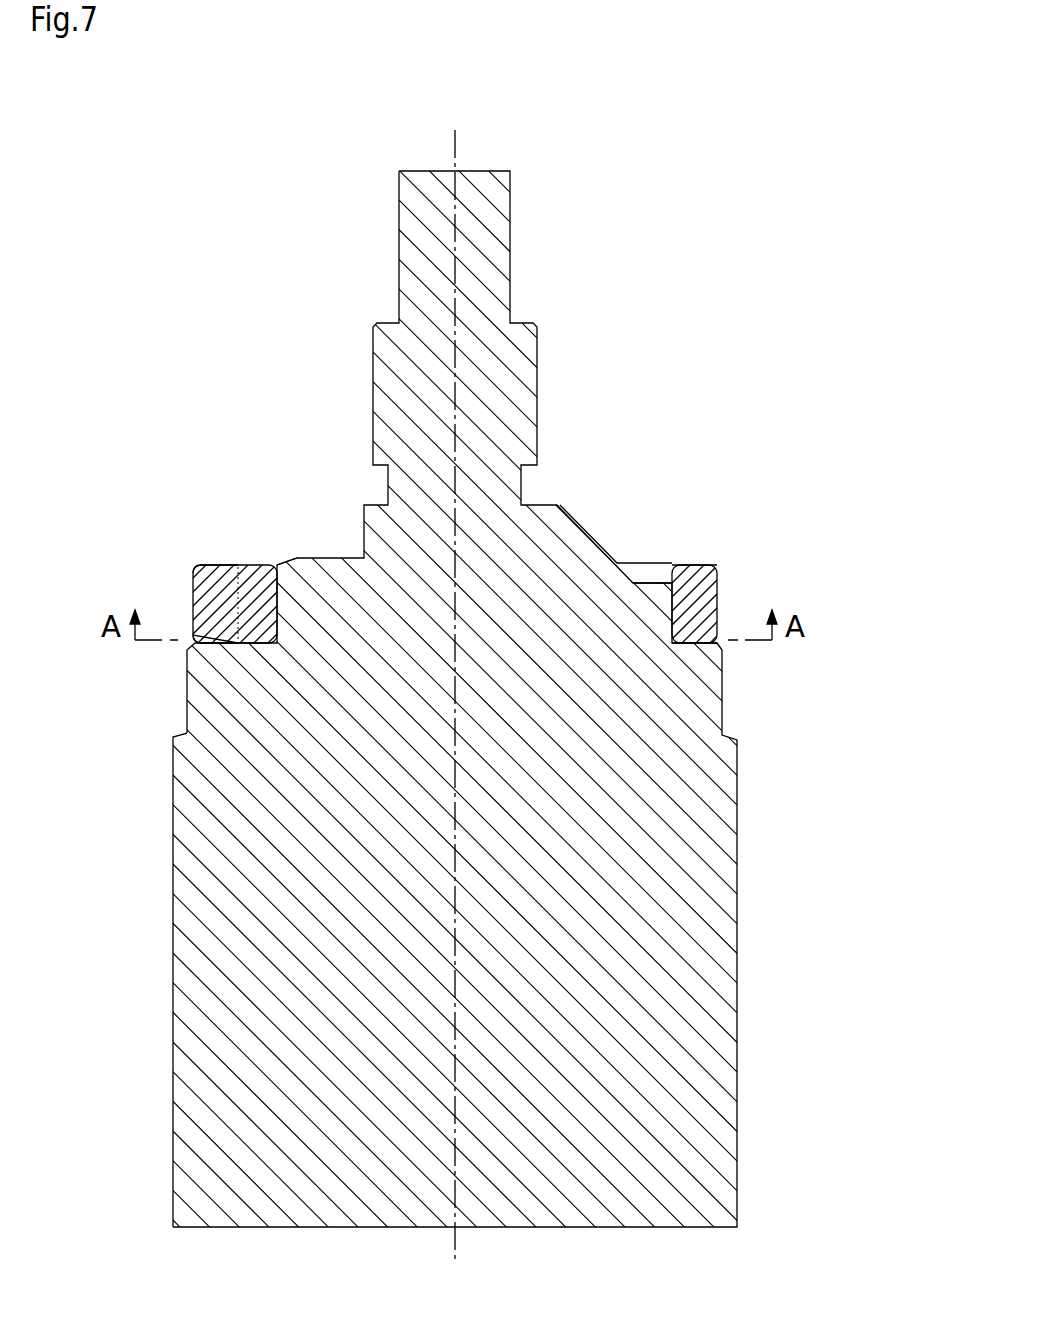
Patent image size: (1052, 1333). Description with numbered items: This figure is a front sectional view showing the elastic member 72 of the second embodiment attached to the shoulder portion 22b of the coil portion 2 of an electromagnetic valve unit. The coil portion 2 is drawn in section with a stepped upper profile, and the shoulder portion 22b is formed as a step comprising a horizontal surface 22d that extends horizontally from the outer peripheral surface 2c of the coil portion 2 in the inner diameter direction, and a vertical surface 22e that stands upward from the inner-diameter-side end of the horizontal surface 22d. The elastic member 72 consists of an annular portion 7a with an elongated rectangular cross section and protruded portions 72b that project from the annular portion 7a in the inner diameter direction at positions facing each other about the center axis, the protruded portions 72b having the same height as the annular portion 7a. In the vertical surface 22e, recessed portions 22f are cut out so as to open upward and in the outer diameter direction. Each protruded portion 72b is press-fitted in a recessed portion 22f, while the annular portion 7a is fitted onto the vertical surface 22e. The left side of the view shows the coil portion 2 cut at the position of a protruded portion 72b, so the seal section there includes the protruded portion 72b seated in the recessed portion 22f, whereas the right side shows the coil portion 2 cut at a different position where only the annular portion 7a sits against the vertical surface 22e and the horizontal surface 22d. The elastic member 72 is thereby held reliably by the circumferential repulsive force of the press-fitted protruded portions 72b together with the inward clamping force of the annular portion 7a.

The coil portion 2 is at (738, 930).
The outer peripheral surface 2c is at (173, 912).
The elastic member 72 is at (293, 458).
The annular portion 7a is at (545, 554).
The protruded portion 72b is at (262, 598).
The recessed portion 22f is at (265, 594).
The shoulder portion 22b is at (843, 533).
The vertical surface 22e is at (717, 590).
The horizontal surface 22d is at (717, 605).